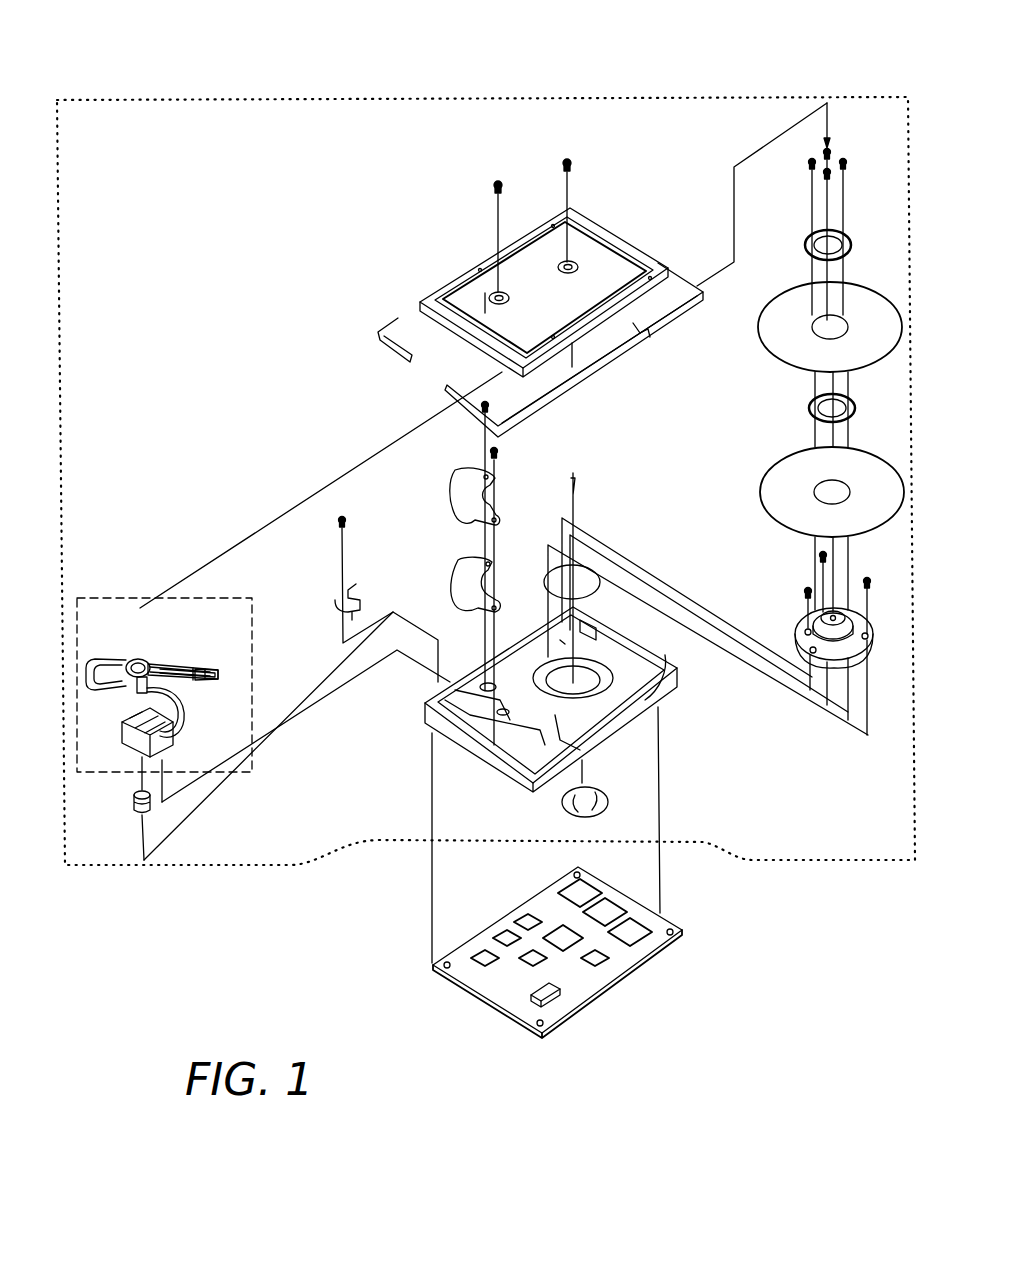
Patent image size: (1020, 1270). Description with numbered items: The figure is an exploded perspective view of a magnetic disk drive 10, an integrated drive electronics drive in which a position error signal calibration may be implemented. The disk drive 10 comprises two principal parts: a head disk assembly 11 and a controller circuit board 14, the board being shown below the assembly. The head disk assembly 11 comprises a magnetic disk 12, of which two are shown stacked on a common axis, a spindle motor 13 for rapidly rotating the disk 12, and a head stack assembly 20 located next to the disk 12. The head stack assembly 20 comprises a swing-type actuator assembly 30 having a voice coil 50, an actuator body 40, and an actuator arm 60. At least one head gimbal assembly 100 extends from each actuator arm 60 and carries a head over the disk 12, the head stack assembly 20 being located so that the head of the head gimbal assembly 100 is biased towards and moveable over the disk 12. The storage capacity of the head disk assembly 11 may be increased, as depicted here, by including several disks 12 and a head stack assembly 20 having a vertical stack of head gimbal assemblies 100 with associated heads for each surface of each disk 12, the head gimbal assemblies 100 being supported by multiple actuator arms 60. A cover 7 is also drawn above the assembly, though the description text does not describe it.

The magnetic disk drive 10 is at (302, 72).
The head disk assembly 11 is at (762, 862).
The cover 7 is at (447, 270).
The magnetic disk 12 is at (770, 468).
The spindle motor 13 is at (798, 625).
The controller circuit board 14 is at (603, 992).
The head stack assembly 20 is at (112, 598).
The swing-type actuator assembly 30 is at (87, 650).
The actuator body 40 is at (147, 663).
The voice coil 50 is at (120, 690).
The actuator arm 60 is at (193, 680).
The head gimbal assembly 100 is at (193, 670).